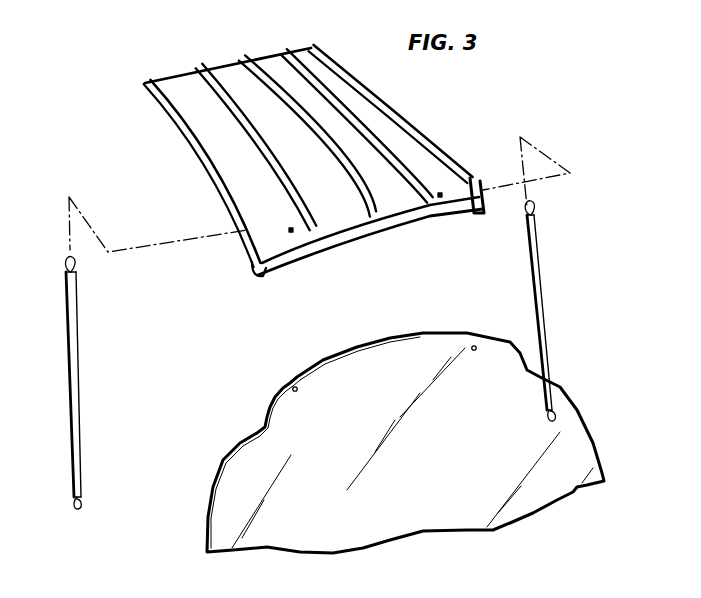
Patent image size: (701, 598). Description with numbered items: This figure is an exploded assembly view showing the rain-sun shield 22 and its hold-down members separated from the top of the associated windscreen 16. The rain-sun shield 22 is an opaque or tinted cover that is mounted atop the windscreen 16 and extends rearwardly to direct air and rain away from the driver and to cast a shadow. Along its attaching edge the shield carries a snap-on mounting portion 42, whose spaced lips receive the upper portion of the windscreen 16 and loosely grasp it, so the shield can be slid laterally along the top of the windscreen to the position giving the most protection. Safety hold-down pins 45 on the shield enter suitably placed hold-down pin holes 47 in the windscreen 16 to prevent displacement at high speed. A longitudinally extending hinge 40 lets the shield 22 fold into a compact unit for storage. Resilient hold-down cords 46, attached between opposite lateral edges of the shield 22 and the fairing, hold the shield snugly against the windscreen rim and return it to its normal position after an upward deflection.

The windscreen 16 is at (407, 350).
The rain-sun shield 22 is at (313, 144).
The longitudinally extending hinge 40 is at (273, 80).
The mounting portion 42 is at (486, 196).
The safety hold-down pin 45 is at (440, 197).
The resilient hold-down cords 46 is at (77, 400).
The hold-down pin hole 47 is at (292, 386).